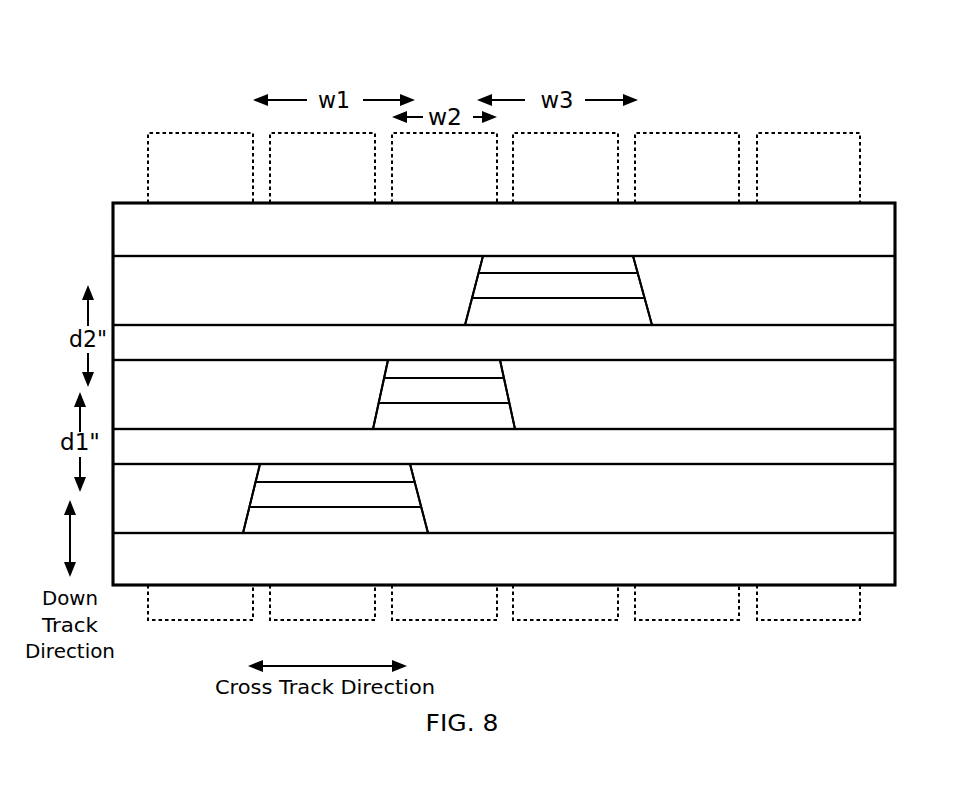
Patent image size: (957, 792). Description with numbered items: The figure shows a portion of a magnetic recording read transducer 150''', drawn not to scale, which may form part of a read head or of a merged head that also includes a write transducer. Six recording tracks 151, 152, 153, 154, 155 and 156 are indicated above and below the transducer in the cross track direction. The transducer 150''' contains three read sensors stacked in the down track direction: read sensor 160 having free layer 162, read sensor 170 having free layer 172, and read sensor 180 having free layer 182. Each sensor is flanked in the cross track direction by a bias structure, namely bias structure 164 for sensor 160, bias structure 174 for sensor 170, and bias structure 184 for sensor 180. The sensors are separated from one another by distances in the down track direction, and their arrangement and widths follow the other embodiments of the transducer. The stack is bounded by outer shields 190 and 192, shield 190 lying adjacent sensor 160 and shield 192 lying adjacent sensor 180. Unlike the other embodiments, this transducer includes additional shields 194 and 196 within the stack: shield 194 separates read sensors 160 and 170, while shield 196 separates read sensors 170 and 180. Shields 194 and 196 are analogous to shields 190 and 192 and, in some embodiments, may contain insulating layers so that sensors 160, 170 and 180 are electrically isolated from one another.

The magnetic recording read transducer 150''' is at (504, 292).
The track 151 is at (200, 376).
The track 152 is at (322, 376).
The track 153 is at (444, 376).
The track 154 is at (565, 376).
The track 155 is at (687, 376).
The track 156 is at (808, 376).
The read sensor 160 is at (301, 556).
The free layer 162 is at (335, 498).
The bias structure 164 is at (504, 498).
The read sensor 170 is at (452, 470).
The free layer 172 is at (444, 394).
The bias structure 174 is at (504, 394).
The read sensor 180 is at (587, 230).
The free layer 182 is at (558, 290).
The bias structure 184 is at (504, 290).
The shield 190 is at (504, 559).
The shield 192 is at (504, 229).
The shield 194 is at (504, 446).
The shield 196 is at (504, 342).